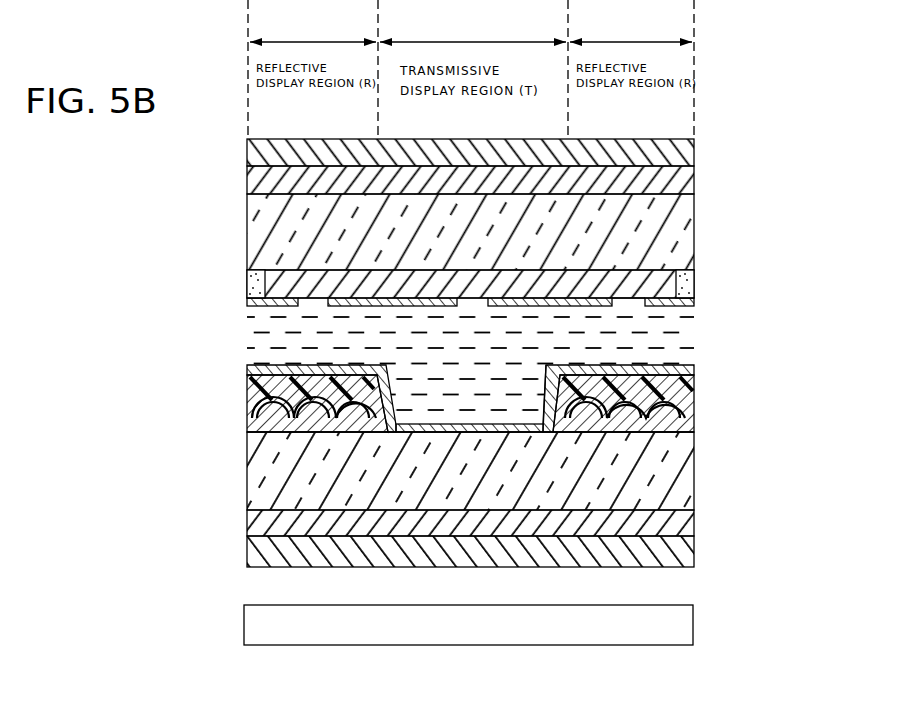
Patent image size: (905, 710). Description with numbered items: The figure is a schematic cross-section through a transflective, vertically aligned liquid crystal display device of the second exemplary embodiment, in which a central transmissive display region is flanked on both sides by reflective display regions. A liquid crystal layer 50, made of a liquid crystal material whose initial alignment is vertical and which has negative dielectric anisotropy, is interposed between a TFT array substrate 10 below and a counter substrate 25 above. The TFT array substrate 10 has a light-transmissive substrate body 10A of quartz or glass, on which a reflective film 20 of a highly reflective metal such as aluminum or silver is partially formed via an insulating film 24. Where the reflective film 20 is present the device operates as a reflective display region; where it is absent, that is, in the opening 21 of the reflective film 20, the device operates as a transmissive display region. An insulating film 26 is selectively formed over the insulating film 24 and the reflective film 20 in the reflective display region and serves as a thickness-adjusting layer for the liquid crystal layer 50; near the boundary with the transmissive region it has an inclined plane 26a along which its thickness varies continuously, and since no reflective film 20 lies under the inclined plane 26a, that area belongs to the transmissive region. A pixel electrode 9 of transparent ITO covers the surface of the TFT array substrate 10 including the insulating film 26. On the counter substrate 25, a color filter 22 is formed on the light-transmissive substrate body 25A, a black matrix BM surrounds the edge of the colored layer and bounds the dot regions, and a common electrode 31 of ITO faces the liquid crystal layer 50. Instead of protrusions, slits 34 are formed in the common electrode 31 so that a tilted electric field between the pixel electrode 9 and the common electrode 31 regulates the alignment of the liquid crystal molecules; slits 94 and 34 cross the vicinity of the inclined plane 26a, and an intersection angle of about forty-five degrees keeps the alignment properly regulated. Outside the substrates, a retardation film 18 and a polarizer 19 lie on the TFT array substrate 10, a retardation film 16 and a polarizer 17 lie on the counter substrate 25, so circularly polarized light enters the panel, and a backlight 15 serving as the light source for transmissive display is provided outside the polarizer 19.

The TFT array substrate 10 is at (230, 365).
The substrate body 10A is at (697, 480).
The backlight 15 is at (680, 627).
The retardation film 16 is at (697, 182).
The polarizer 17 is at (697, 145).
The retardation film 18 is at (675, 528).
The polarizer 19 is at (678, 555).
The reflective film 20 is at (697, 398).
The opening 21 is at (377, 434).
The color filter 22 is at (697, 268).
The insulating film 24 is at (697, 427).
The counter substrate 25 is at (232, 142).
The substrate body 25A is at (697, 218).
The insulating film 26 is at (697, 380).
The inclined plane 26a is at (545, 372).
The common electrode 31 is at (697, 302).
The slits 34 is at (312, 297).
The liquid crystal layer 50 is at (697, 323).
The pixel electrode 9 is at (697, 368).
The slits 94 is at (427, 433).
The black matrix BM is at (697, 282).